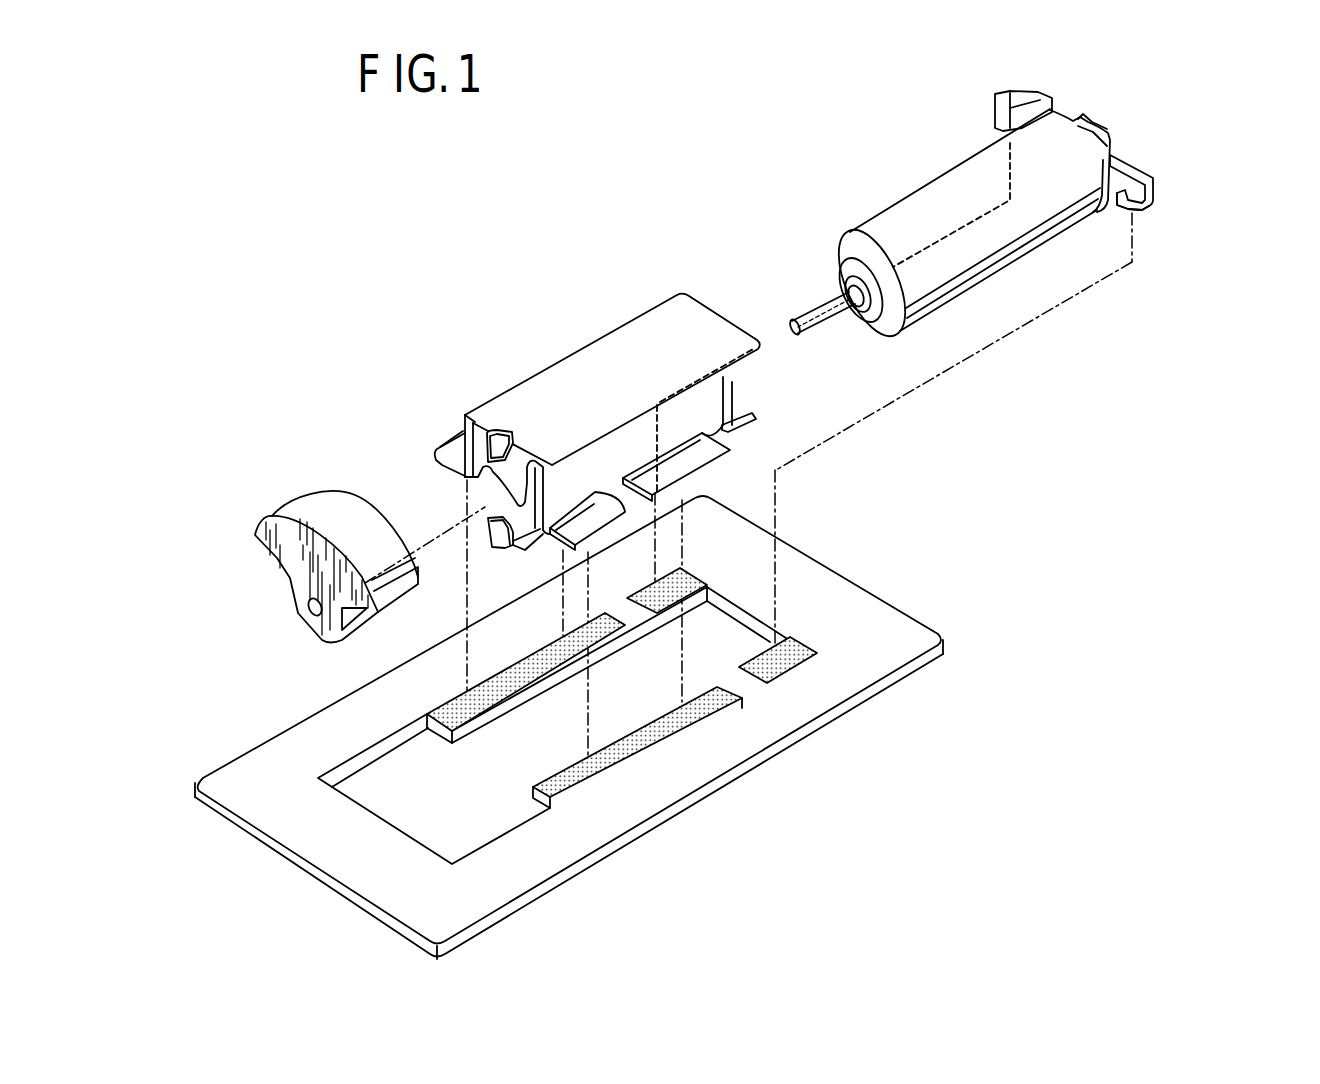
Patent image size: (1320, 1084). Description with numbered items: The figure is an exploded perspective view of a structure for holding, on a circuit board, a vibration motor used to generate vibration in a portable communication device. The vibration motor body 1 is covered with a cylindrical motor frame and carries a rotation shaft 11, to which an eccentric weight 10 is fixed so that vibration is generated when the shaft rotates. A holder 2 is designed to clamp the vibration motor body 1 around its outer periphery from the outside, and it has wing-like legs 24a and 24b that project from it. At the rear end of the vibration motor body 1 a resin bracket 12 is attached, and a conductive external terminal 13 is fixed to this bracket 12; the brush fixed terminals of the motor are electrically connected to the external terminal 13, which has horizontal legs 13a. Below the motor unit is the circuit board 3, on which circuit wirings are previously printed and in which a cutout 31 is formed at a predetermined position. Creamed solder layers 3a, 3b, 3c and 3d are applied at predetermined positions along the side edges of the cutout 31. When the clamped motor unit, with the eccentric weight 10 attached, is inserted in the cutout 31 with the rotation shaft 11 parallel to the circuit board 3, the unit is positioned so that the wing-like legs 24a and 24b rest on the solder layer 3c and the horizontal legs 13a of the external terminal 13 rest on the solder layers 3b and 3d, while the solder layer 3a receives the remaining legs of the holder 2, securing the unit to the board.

The vibration motor body 1 is at (868, 193).
The rotation shaft 11 is at (810, 310).
The resin bracket 12 is at (1068, 108).
The conductive external terminal 13 is at (1137, 180).
The horizontal leg 13a is at (1147, 212).
The holder 2 is at (558, 343).
The wing-like leg 24a is at (580, 525).
The wing-like leg 24b is at (705, 455).
The eccentric weight 10 is at (312, 503).
The circuit board 3 is at (822, 592).
The cutout 31 is at (465, 803).
The creamed solder layer 3a is at (495, 680).
The creamed solder layer 3b is at (672, 597).
The creamed solder layer 3c is at (622, 757).
The creamed solder layer 3d is at (787, 657).